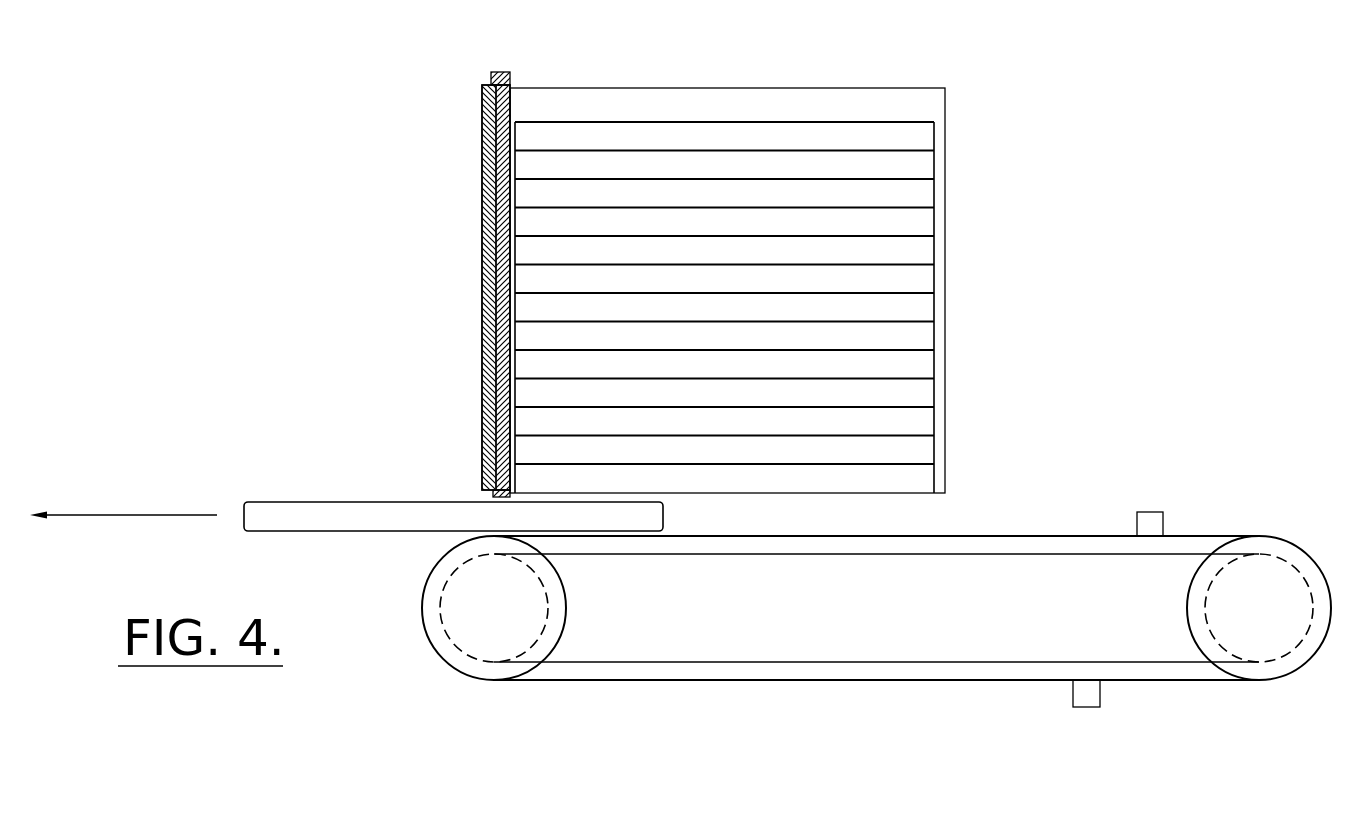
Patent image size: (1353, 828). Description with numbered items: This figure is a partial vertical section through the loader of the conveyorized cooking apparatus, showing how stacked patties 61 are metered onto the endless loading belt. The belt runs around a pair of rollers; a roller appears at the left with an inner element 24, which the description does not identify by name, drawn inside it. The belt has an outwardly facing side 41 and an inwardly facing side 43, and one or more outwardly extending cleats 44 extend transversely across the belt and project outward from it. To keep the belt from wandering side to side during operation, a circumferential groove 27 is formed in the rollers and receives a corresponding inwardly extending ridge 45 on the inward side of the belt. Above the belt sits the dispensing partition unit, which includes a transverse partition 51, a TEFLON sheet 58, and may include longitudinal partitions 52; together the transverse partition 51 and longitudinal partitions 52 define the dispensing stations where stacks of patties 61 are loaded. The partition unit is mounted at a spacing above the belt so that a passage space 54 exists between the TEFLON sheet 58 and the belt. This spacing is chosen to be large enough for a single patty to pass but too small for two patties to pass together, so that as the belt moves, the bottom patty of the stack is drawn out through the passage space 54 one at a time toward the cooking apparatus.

The drive shaft 24 is at (497, 640).
The circumferential groove 27 is at (432, 610).
The outwardly facing side 41 is at (838, 681).
The inwardly facing side 43 is at (875, 681).
The outwardly extending cleats 44 is at (1145, 512).
The inwardly extending ridge 45 is at (805, 661).
The transverse partition 51 is at (484, 160).
The longitudinal partition 52 is at (870, 106).
The passage space 54 is at (476, 497).
The TEFLON sheet 58 is at (507, 72).
The patties 61 is at (913, 283).